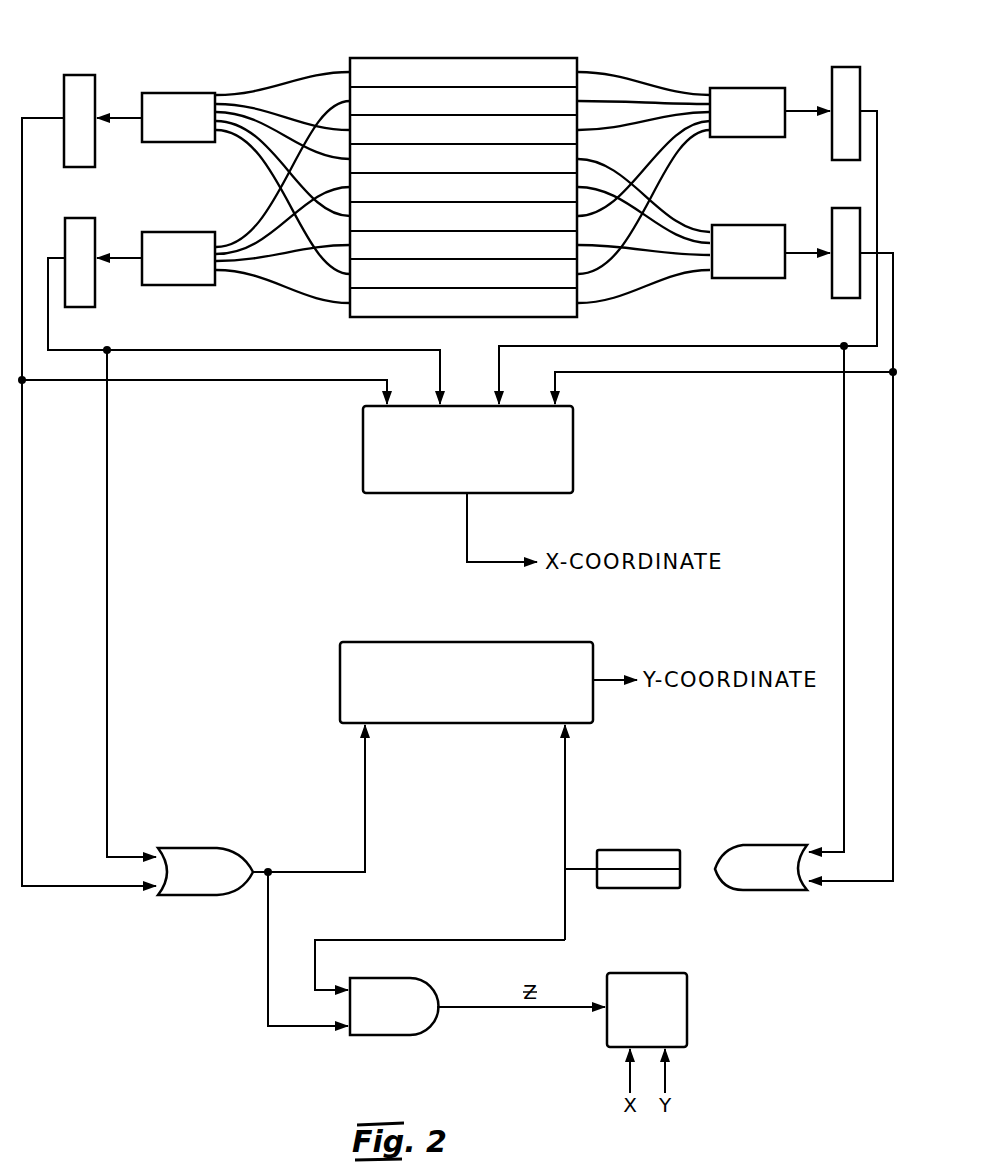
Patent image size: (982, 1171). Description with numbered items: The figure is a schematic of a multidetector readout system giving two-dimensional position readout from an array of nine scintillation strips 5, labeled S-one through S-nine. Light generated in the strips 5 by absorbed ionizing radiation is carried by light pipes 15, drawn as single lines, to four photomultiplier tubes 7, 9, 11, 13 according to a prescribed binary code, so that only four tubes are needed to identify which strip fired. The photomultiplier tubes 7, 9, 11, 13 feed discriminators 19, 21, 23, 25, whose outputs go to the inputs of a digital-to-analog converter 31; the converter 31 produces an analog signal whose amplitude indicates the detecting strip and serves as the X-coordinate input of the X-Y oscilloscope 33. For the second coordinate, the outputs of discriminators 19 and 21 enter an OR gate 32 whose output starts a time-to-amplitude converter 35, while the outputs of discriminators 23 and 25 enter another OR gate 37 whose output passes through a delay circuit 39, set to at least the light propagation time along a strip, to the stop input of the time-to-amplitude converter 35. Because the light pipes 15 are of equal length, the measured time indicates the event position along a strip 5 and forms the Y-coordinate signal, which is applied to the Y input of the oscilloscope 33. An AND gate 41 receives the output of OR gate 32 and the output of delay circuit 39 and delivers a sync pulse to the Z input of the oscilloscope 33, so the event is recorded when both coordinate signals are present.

The scintillation strips 5 is at (516, 95).
The photomultiplier tube 7 is at (178, 93).
The photomultiplier tube 9 is at (182, 232).
The photomultiplier tube 11 is at (742, 88).
The photomultiplier tube 13 is at (743, 225).
The light pipes 15 is at (275, 112).
The discriminator 19 is at (81, 75).
The discriminator 21 is at (81, 218).
The discriminator 23 is at (845, 67).
The discriminator 25 is at (847, 208).
The digital-to-analog converter 31 is at (575, 437).
The OR gate 32 is at (200, 848).
The X-Y oscilloscope 33 is at (687, 995).
The time-to-amplitude converter 35 is at (392, 642).
The OR gate 37 is at (762, 845).
The delay circuit 39 is at (643, 850).
The AND gate 41 is at (432, 992).